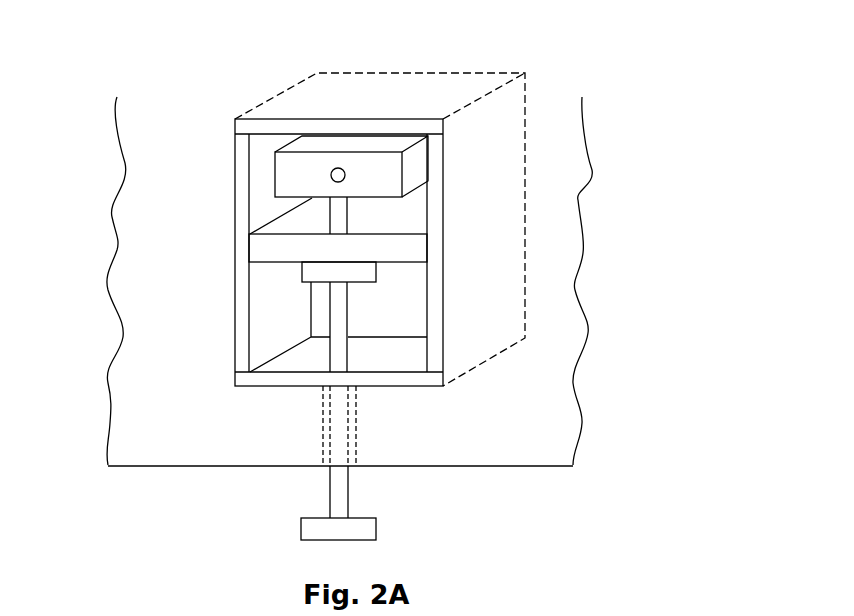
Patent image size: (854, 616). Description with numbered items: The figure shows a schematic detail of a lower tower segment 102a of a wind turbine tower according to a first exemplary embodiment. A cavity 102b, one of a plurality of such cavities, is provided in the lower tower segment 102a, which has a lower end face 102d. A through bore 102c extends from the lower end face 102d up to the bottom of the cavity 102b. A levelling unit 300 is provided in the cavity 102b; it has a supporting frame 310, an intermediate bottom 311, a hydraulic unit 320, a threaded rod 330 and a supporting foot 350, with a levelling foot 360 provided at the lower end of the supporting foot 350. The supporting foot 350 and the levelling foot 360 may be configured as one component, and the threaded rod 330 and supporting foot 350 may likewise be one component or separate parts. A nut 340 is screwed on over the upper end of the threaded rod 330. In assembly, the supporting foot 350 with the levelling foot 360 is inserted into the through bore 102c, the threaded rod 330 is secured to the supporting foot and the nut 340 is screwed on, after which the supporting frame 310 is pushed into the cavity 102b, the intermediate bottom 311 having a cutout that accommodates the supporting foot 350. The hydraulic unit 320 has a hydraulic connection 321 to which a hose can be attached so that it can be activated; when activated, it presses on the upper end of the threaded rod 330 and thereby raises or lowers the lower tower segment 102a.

The lower tower segment 102a is at (151, 281).
The cavity 102b is at (448, 92).
The through bore 102c is at (358, 420).
The lower end face 102d is at (148, 467).
The levelling unit 300 is at (243, 210).
The supporting frame 310 is at (492, 252).
The intermediate bottom 311 is at (258, 240).
The hydraulic unit 320 is at (311, 183).
The hydraulic connection 321 is at (342, 181).
The threaded rod 330 is at (340, 346).
The nut 340 is at (313, 272).
The supporting foot 350 is at (341, 487).
The levelling foot 360 is at (368, 522).